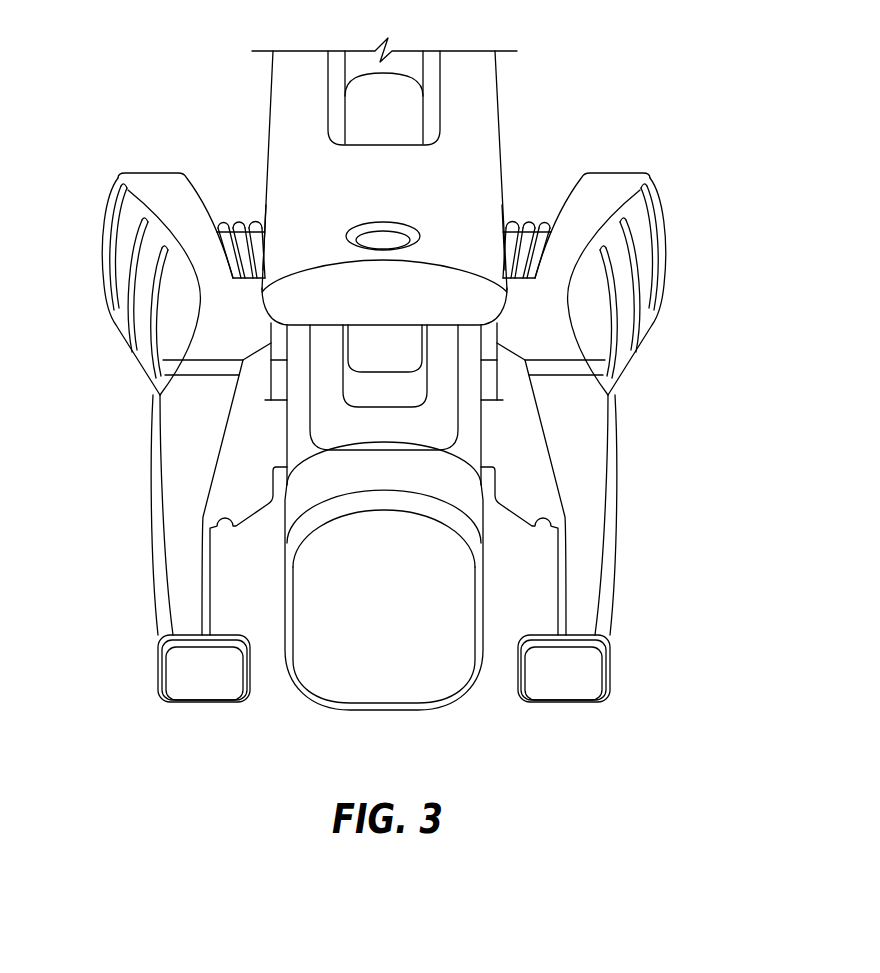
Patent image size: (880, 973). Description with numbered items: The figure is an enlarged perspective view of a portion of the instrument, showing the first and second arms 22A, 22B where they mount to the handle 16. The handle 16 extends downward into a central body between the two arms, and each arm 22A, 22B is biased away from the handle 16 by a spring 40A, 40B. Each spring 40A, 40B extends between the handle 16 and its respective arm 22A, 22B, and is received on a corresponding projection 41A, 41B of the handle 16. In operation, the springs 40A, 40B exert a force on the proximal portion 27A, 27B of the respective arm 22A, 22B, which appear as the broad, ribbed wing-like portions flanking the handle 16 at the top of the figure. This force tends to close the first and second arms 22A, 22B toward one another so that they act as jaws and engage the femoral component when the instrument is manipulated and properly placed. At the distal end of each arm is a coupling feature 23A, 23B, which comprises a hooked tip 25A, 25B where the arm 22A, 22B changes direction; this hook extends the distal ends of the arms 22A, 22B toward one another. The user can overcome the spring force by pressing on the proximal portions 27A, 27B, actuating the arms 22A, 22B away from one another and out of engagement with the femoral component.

The handle 16 is at (483, 109).
The first arm 22A is at (136, 445).
The second arm 22B is at (632, 445).
The coupling feature 23A is at (163, 711).
The coupling feature 23B is at (605, 711).
The hooked tip 25A is at (202, 683).
The hooked tip 25B is at (566, 683).
The proximal portion 27A is at (110, 240).
The proximal portion 27B is at (658, 240).
The spring 40A is at (239, 222).
The spring 40B is at (527, 222).
The projection 41A is at (260, 230).
The projection 41B is at (522, 250).